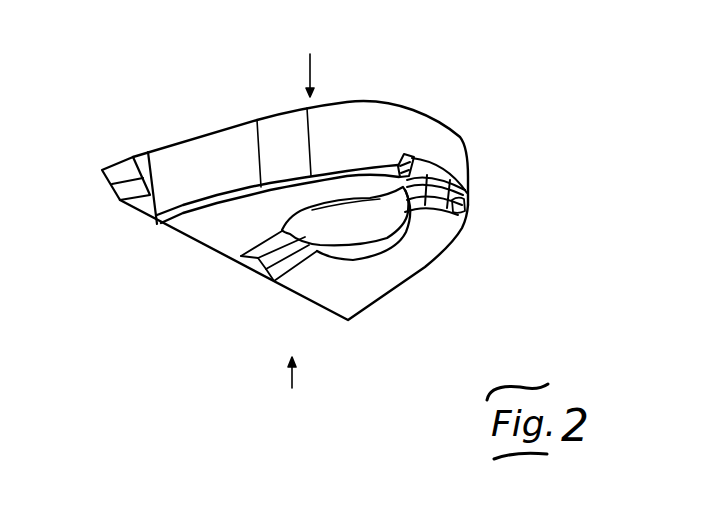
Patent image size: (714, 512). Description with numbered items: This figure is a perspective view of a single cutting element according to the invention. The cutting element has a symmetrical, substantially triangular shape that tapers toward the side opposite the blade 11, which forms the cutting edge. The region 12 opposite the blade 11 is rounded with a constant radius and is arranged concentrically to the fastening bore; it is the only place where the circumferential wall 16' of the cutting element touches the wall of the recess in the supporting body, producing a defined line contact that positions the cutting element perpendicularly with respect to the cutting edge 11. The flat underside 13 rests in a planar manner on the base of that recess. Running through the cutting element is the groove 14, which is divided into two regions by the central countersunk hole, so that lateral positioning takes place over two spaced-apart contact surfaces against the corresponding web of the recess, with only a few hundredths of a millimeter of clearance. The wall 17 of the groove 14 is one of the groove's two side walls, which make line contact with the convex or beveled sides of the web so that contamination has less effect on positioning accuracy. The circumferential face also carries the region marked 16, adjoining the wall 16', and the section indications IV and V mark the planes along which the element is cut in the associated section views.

The blade 11 is at (113, 197).
The region opposite the blade 12 is at (458, 122).
The underside 13 is at (215, 222).
The groove 14 is at (425, 180).
The wall segment 16 is at (204, 161).
The circumferential wall 16' is at (370, 109).
The wall of the groove 17 is at (468, 203).
The section line IV is at (344, 48).
The section line V is at (321, 396).